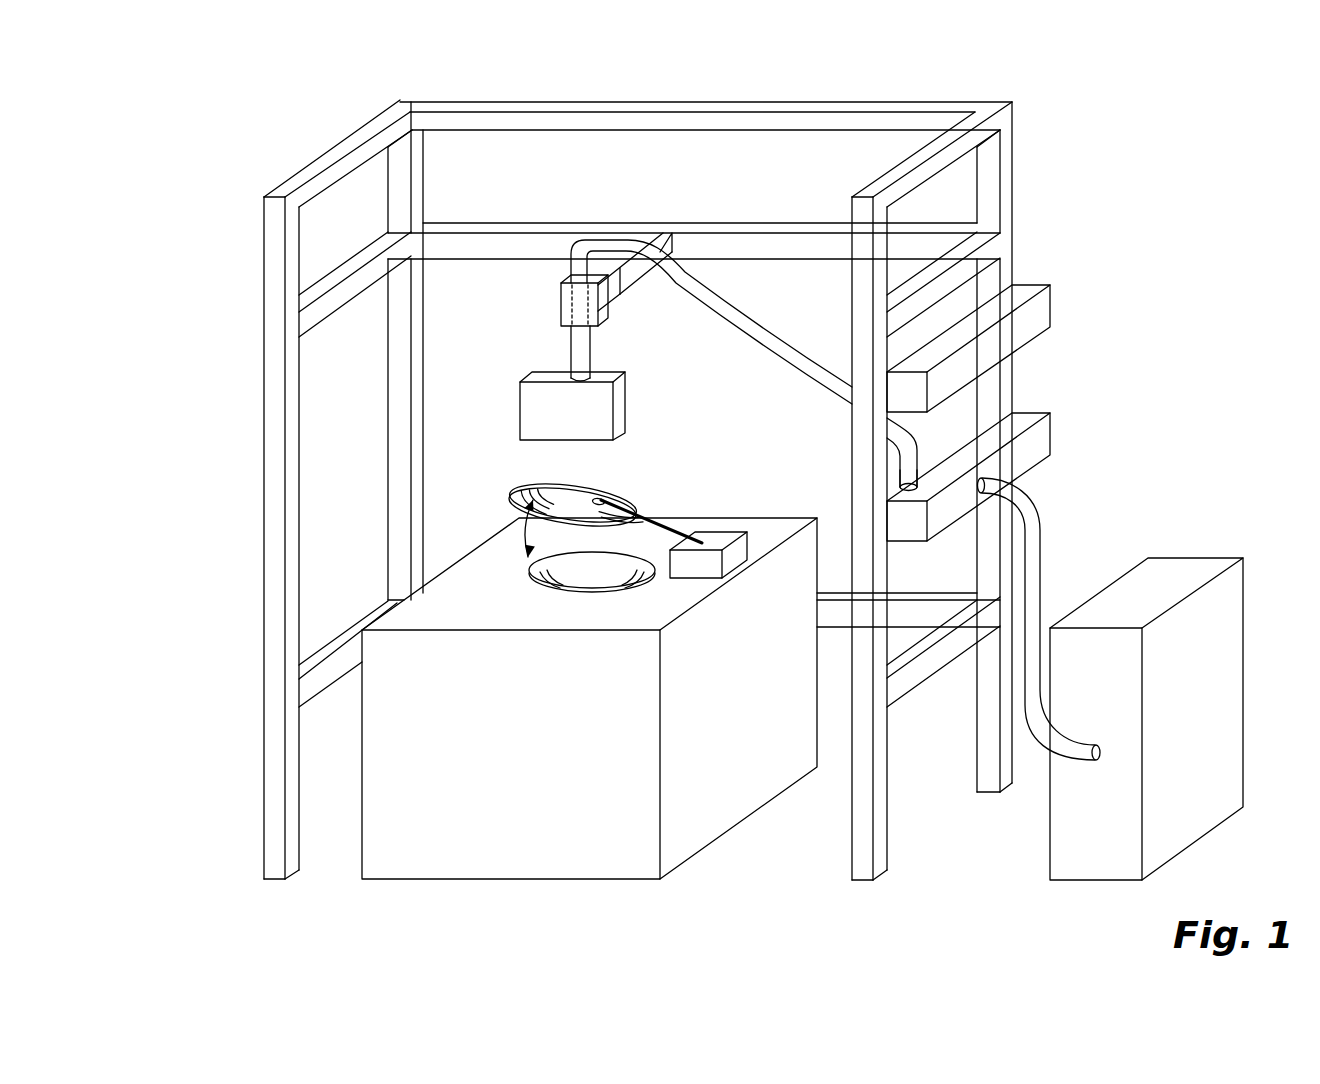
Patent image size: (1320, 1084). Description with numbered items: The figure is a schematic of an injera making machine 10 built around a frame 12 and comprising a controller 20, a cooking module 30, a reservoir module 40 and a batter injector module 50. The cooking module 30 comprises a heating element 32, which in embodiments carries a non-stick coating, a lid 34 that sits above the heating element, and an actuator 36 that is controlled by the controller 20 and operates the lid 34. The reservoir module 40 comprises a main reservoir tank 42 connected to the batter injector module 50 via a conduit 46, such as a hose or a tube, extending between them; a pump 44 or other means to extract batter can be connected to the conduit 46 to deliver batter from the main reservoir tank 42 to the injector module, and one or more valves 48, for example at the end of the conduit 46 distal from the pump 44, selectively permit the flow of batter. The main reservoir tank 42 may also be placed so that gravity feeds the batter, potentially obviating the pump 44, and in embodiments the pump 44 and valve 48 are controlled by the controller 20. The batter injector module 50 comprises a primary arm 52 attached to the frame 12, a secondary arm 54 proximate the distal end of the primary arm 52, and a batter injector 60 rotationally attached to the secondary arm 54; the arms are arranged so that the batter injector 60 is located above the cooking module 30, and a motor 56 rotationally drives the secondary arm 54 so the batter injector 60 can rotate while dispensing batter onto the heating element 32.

The injera making machine 10 is at (681, 486).
The frame 12 is at (252, 342).
The controller 20 is at (1030, 315).
The cooking module 30 is at (492, 756).
The heating element 32 is at (532, 577).
The lid 34 is at (537, 490).
The actuator 36 is at (727, 532).
The reservoir module 40 is at (1095, 746).
The main reservoir tank 42 is at (1177, 702).
The pump 44 is at (1017, 448).
The conduit 46 is at (762, 322).
The valve 48 is at (897, 493).
The batter injector module 50 is at (581, 303).
The primary arm 52 is at (635, 270).
The secondary arm 54 is at (593, 337).
The motor 56 is at (560, 305).
The batter injector 60 is at (557, 422).